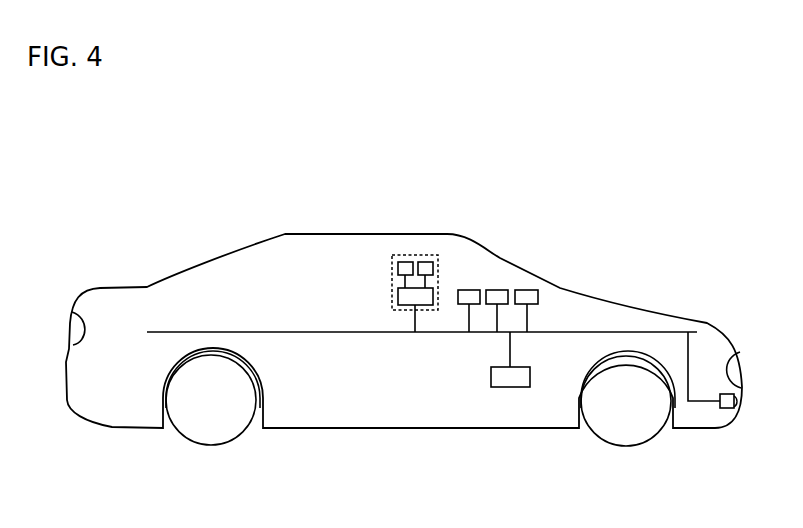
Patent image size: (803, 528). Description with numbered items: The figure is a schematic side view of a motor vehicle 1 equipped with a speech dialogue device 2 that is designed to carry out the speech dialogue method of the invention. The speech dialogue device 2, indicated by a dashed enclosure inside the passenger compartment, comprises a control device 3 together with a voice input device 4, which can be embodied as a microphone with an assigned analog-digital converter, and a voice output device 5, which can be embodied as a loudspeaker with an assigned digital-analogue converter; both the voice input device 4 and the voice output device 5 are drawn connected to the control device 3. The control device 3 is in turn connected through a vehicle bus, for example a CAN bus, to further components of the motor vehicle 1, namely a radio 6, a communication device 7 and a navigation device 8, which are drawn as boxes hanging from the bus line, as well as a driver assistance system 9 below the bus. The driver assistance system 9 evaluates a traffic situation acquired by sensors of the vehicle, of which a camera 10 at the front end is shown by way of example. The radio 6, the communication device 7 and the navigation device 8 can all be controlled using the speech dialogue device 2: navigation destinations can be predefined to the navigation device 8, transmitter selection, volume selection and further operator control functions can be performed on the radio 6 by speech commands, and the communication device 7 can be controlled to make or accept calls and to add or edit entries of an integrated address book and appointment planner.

The motor vehicle 1 is at (250, 207).
The speech dialogue device 2 is at (380, 252).
The control device 3 is at (398, 296).
The voice input device 4 is at (404, 262).
The voice output device 5 is at (425, 262).
The radio 6 is at (529, 290).
The communication device 7 is at (500, 290).
The navigation device 8 is at (470, 290).
The driver assistance system 9 is at (510, 387).
The camera 10 is at (727, 408).